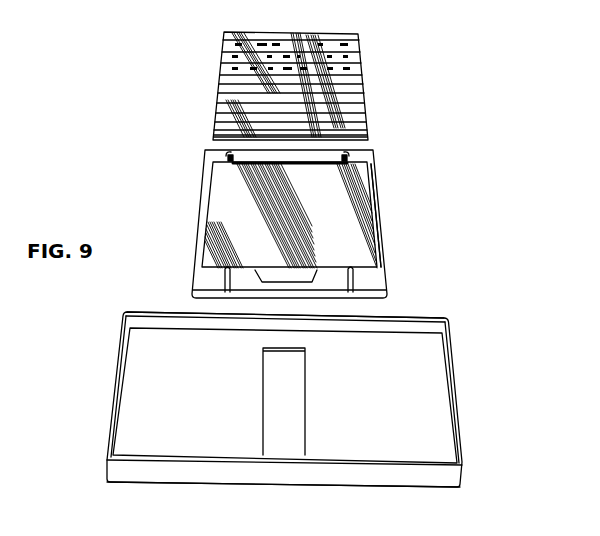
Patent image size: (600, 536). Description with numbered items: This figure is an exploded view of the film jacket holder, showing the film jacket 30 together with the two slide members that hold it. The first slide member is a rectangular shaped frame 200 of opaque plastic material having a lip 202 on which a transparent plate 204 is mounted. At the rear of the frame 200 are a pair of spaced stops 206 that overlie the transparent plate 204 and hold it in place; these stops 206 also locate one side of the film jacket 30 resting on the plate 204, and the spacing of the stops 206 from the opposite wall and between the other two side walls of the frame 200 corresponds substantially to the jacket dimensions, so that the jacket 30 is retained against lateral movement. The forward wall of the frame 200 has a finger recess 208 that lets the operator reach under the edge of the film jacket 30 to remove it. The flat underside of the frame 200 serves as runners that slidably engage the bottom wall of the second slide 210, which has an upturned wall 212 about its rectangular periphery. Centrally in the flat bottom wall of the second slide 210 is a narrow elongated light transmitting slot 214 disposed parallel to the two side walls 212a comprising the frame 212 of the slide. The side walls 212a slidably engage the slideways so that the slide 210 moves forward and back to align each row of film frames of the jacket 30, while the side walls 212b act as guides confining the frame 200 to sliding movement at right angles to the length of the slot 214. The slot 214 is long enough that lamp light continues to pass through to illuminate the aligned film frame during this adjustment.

The film jacket 30 is at (362, 70).
The rectangular shaped frame 200 is at (206, 214).
The lip 202 is at (362, 186).
The transparent plate 204 is at (360, 242).
The stops 206 is at (228, 155).
The finger recess 208 is at (287, 270).
The second slide 210 is at (132, 423).
The upturned wall 212 is at (284, 485).
The side walls 212a is at (120, 370).
The side walls 212b is at (401, 317).
The light transmitting slot 214 is at (305, 405).